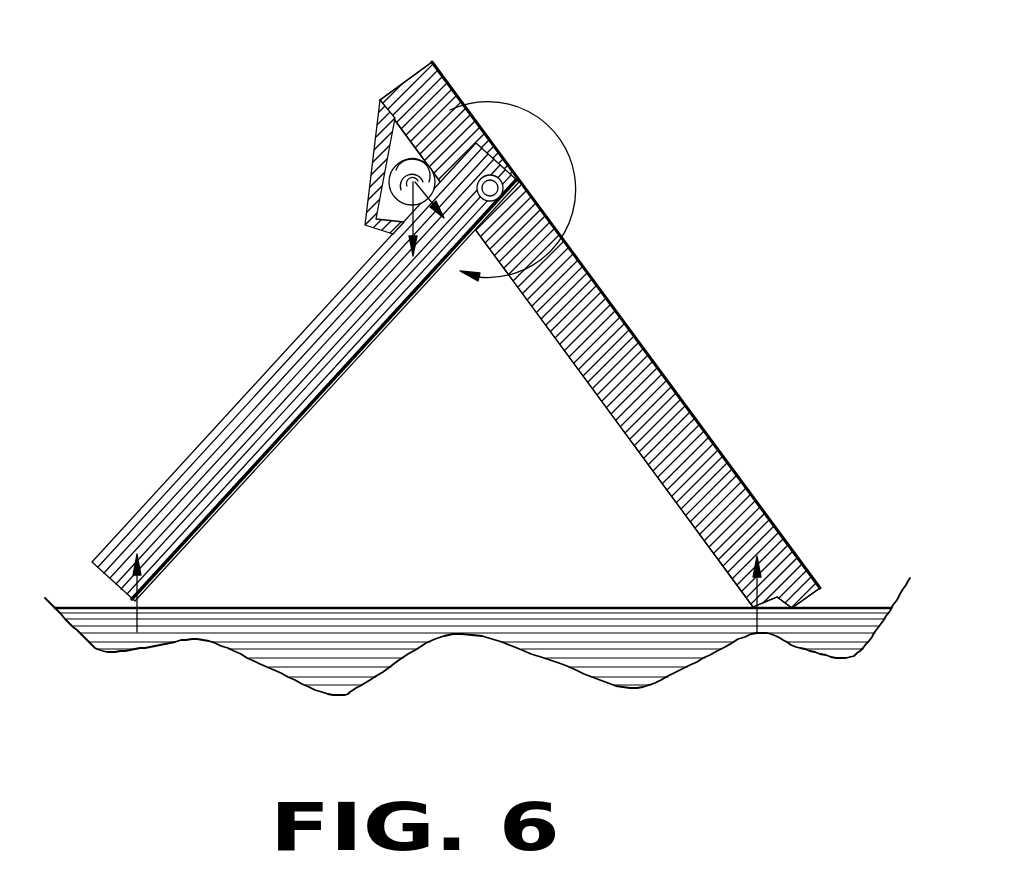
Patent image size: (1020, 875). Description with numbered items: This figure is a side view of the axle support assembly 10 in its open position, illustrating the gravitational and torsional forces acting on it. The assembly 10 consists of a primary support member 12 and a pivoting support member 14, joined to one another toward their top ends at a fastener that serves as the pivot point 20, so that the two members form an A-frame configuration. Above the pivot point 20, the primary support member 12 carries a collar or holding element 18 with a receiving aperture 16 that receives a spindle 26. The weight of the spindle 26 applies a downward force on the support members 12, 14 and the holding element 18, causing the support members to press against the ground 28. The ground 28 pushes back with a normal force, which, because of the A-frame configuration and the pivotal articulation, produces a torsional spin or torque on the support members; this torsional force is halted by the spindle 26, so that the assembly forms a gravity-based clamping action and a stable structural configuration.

The axle support assembly 10 is at (510, 350).
The primary support member 12 is at (638, 393).
The pivoting support member 14 is at (223, 503).
The receiving aperture 16 is at (395, 132).
The holding element 18 is at (364, 230).
The pivot point 20 is at (553, 127).
The spindle 26 is at (403, 170).
The ground 28 is at (550, 612).